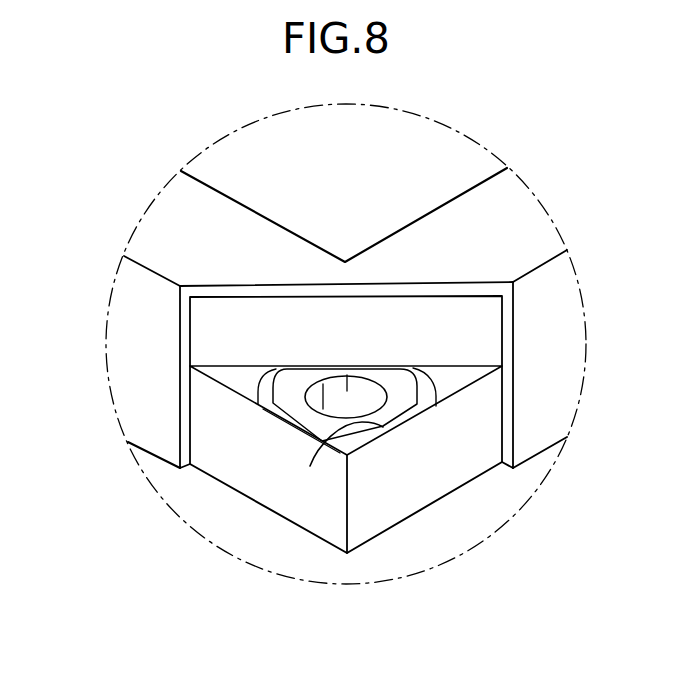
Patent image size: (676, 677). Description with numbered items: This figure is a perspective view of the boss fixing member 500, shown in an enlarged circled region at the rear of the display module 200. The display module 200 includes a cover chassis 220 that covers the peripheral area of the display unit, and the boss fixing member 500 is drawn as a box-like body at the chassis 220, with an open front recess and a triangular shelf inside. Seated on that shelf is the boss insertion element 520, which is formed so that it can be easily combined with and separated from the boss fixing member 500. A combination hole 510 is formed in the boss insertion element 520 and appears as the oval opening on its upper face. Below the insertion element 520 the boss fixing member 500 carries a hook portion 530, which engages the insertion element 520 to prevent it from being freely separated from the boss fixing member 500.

The display module 200 is at (118, 462).
The cover chassis 220 is at (503, 222).
The boss fixing member 500 is at (313, 552).
The combination hole 510 is at (364, 395).
The boss insertion element 520 is at (405, 396).
The hook portion 530 is at (350, 442).